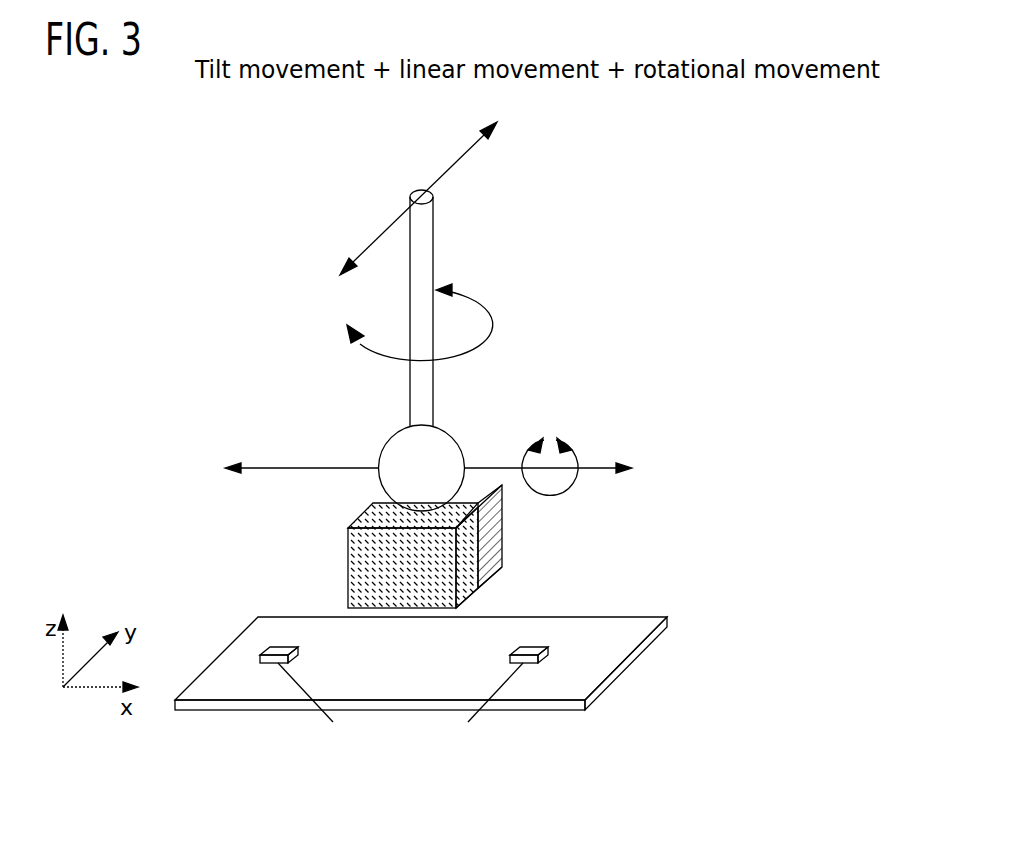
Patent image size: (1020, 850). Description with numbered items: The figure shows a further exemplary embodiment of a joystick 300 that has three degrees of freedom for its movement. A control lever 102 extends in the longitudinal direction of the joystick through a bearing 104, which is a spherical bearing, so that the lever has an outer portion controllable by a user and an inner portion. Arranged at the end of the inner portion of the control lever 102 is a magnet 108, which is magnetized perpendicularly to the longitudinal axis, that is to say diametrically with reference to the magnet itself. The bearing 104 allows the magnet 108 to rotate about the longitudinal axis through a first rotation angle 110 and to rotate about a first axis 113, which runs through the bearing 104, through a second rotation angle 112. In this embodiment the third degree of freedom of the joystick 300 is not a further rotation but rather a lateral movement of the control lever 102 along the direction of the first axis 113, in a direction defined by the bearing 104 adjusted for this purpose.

The control lever 102 is at (435, 224).
The bearing 104 is at (462, 445).
The magnet 108 is at (348, 570).
The first rotation angle 110 is at (475, 318).
The second rotation angle 112 is at (574, 480).
The first axis 113 is at (295, 465).
The joystick 300 is at (697, 206).